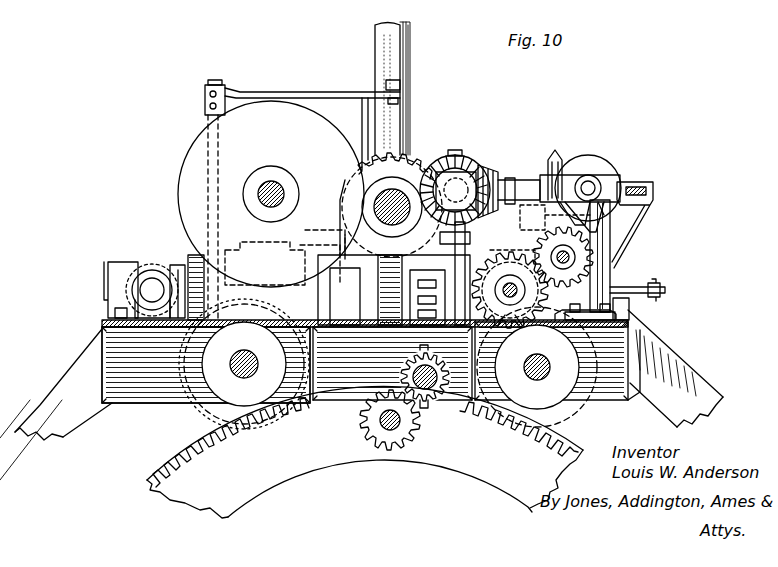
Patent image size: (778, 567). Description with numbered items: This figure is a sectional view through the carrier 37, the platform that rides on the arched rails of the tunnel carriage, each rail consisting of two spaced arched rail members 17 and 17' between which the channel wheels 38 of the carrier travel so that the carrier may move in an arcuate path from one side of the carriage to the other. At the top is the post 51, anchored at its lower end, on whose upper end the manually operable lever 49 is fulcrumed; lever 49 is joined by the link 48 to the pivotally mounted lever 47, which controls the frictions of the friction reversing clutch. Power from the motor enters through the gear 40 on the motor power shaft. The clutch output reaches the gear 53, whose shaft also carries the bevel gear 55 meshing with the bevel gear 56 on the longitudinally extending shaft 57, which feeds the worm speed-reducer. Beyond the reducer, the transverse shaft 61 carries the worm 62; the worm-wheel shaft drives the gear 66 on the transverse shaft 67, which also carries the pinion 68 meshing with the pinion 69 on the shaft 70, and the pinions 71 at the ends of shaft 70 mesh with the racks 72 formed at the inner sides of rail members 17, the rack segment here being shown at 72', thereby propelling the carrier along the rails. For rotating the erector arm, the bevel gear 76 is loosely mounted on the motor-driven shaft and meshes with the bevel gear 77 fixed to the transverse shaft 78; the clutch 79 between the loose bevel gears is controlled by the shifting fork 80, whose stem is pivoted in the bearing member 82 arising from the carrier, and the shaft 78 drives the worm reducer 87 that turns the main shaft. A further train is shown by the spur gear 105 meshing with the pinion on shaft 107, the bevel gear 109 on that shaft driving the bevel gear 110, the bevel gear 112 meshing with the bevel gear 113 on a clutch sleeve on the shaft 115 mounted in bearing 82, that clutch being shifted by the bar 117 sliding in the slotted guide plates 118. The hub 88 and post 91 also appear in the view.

The rail member 17 is at (380, 495).
The rail member 17' is at (56, 404).
The carrier 37 is at (656, 346).
The channel wheels 38 is at (235, 405).
The gear 40 is at (585, 246).
The pivotally mounted lever 47 is at (207, 113).
The link 48 is at (298, 80).
The manually operable lever 49 is at (402, 92).
The support or post 51 is at (362, 110).
The gear 53 is at (180, 268).
The bevel gear 55 is at (178, 276).
The bevel gear 56 is at (150, 284).
The shaft 57 is at (122, 276).
The shaft 61 is at (621, 296).
The worm 62 is at (575, 228).
The gear 66 is at (392, 365).
The shaft 67 is at (432, 388).
The pinion 68 is at (405, 372).
The pinion 69 is at (415, 440).
The shaft 70 is at (383, 423).
The pinions 71 is at (488, 327).
The racks 72 is at (576, 329).
The rack 72' is at (365, 452).
The bevel gear 76 is at (540, 255).
The bevel gear 77 is at (506, 239).
The shaft 78 is at (410, 290).
The clutch 79 is at (383, 200).
The shifting fork 80 is at (500, 262).
The bearing member 82 is at (662, 290).
The worm reducer 87 is at (271, 210).
The hub 88 is at (276, 184).
The post 91 is at (408, 32).
The spur gear 105 is at (426, 163).
The shaft 107 is at (496, 165).
The bevel gear 109 is at (460, 166).
The bevel gear 110 is at (488, 175).
The bevel gear 112 is at (556, 158).
The bevel gear 113 is at (588, 166).
The shaft 115 is at (593, 186).
The bar 117 is at (640, 186).
The slotted guide plates 118 is at (655, 196).